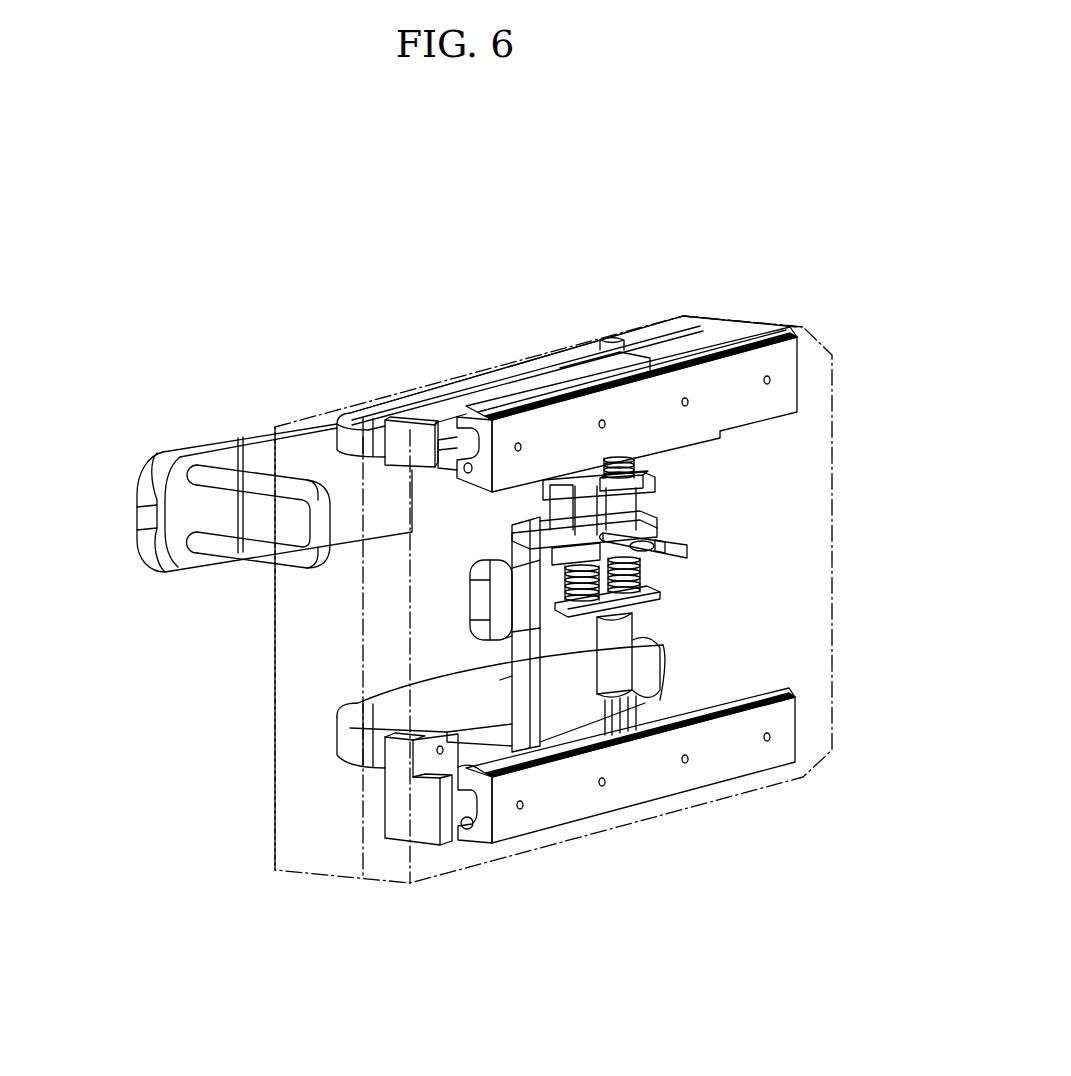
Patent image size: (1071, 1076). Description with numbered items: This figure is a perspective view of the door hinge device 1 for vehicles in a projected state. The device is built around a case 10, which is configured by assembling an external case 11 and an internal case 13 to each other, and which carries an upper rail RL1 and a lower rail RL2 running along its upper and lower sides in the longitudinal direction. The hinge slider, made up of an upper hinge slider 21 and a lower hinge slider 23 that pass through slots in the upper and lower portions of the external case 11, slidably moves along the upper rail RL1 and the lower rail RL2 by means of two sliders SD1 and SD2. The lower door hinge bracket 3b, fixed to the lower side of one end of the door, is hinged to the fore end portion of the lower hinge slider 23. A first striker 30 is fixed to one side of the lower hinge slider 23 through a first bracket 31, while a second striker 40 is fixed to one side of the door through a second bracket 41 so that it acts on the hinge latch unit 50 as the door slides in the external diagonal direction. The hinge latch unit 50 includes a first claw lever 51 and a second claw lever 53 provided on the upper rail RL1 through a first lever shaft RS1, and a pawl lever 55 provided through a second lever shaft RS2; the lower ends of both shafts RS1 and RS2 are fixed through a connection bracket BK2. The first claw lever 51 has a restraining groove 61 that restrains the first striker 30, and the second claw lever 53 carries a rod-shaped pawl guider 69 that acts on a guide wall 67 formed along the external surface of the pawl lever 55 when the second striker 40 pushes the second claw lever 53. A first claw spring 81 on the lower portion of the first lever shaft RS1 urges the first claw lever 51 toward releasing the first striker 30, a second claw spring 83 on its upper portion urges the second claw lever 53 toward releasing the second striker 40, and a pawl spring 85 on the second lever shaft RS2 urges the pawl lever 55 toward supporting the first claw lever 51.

The door hinge device 1 is at (500, 237).
The case 10 is at (805, 241).
The external case 11 is at (707, 316).
The internal case 13 is at (792, 328).
The upper hinge slider 21 is at (512, 378).
The lower hinge slider 23 is at (423, 712).
The pawl guider 69 is at (578, 512).
The slider SD1 is at (465, 443).
The slider SD2 is at (470, 803).
The upper rail RL1 is at (767, 405).
The lower rail RL2 is at (643, 783).
The second lever shaft RS2 is at (570, 517).
The first lever shaft RS1 is at (625, 512).
The second claw lever 53 is at (600, 462).
The second claw spring 83 is at (633, 483).
The guide wall 67 is at (545, 528).
The first claw lever 51 is at (647, 542).
The restraining groove 61 is at (660, 549).
The hinge latch unit 50 is at (724, 560).
The pawl lever 55 is at (583, 550).
The first claw spring 81 is at (643, 572).
The pawl spring 85 is at (627, 602).
The connection bracket BK2 is at (645, 592).
The first striker 30 is at (482, 600).
The first bracket 31 is at (530, 652).
The lower door hinge bracket 3b is at (640, 633).
The second striker 40 is at (317, 527).
The second bracket 41 is at (172, 543).